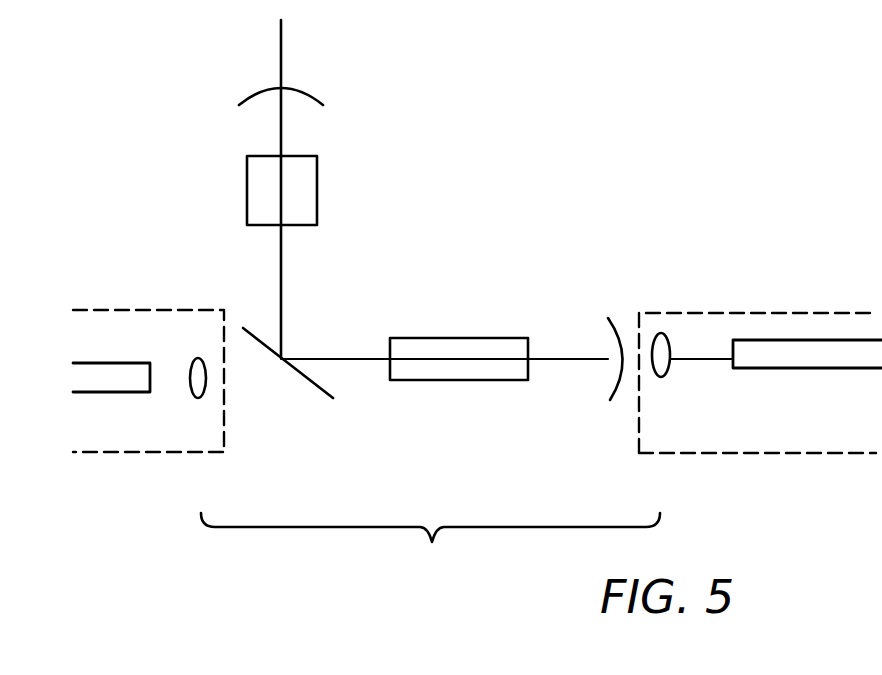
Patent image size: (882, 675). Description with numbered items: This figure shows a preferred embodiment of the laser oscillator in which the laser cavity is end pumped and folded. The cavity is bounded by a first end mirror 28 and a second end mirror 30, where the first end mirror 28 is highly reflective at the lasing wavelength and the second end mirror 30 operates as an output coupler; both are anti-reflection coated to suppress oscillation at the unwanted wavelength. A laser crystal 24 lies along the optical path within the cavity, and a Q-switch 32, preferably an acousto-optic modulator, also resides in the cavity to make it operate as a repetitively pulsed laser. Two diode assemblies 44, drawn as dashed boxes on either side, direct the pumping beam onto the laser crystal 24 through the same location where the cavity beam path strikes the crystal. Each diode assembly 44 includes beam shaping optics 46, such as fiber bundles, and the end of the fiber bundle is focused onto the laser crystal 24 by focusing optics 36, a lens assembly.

The laser crystal 24 is at (458, 338).
The first end mirror 28 is at (618, 332).
The second end mirror 30 is at (302, 91).
The Q-switch 32 is at (317, 190).
The focusing optics 36 is at (196, 358).
The diode assembly 44 is at (150, 452).
The beam shaping optics 46 is at (112, 392).